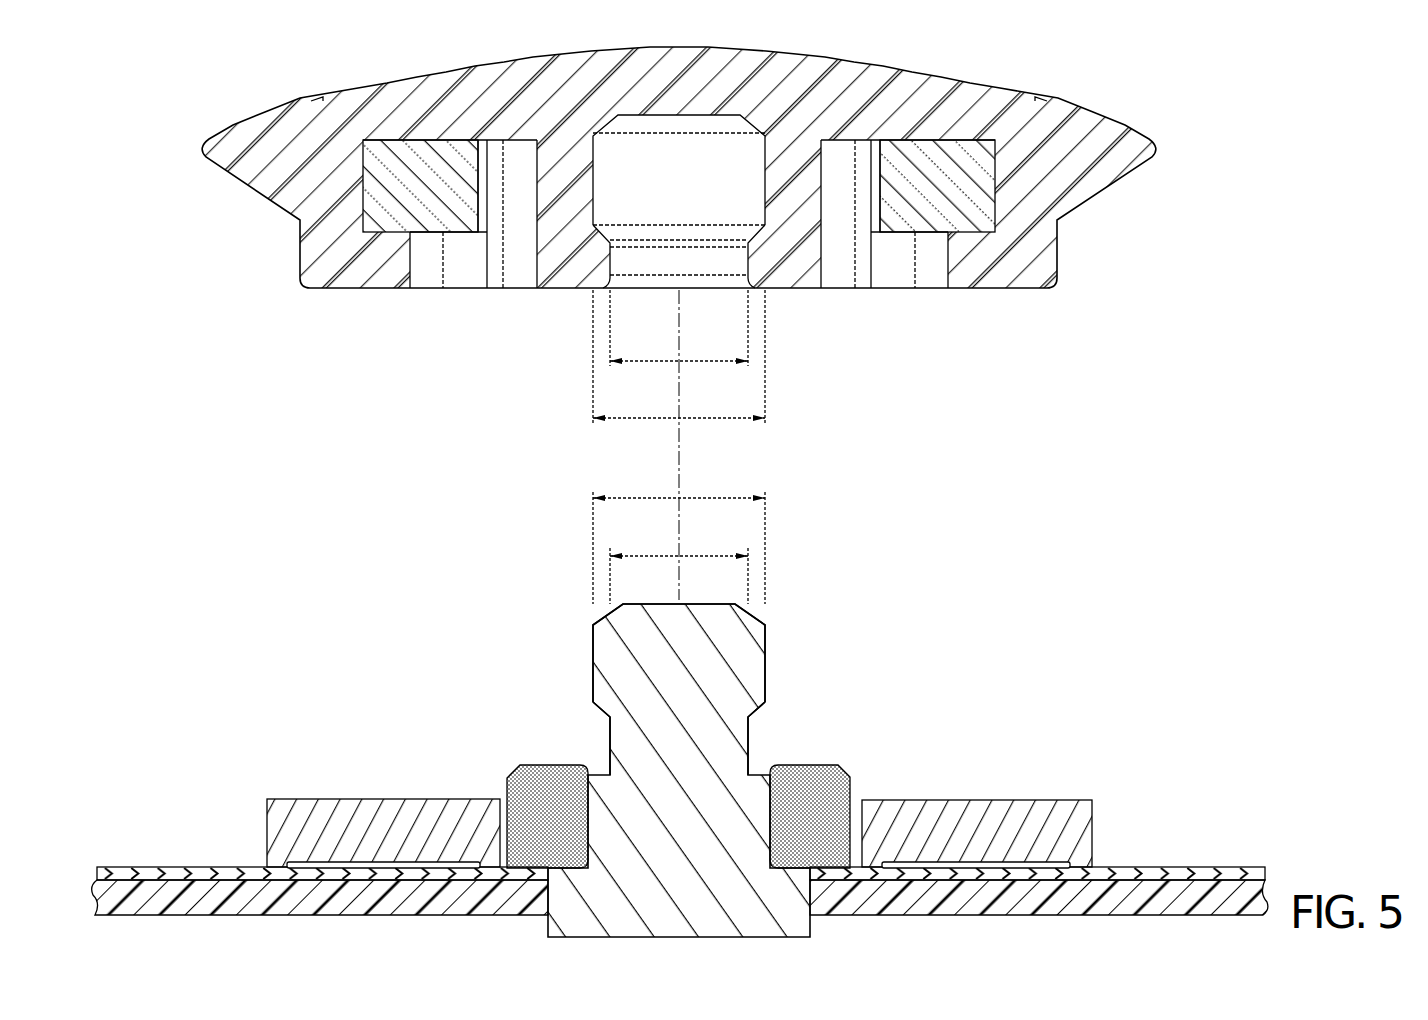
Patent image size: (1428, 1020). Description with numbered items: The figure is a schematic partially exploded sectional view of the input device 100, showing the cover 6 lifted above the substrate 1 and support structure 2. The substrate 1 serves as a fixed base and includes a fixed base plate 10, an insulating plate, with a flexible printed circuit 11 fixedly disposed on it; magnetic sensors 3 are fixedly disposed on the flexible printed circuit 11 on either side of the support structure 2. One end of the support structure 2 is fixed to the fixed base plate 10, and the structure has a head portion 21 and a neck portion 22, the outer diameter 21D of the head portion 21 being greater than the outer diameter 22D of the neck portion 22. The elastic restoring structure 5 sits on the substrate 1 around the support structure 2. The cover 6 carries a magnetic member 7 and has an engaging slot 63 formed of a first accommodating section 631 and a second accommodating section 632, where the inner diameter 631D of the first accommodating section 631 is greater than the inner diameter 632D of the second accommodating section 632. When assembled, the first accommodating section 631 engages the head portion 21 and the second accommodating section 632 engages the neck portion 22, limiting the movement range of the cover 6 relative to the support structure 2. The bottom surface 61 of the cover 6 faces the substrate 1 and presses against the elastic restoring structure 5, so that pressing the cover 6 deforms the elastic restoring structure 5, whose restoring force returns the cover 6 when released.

The input device 100 is at (1167, 77).
The cover 6 is at (679, 223).
The bottom surface 61 is at (353, 296).
The magnetic member 7 is at (461, 240).
The engaging slot 63 is at (750, 257).
The first accommodating section 631 is at (735, 184).
The second accommodating section 632 is at (718, 266).
The inner diameter of the second accommodating section 632D is at (679, 328).
The inner diameter of the first accommodating section 631D is at (679, 357).
The outer diameter of the head portion 21D is at (679, 535).
The outer diameter of the neck portion 22D is at (679, 564).
The support structure 2 is at (713, 770).
The head portion 21 is at (760, 665).
The neck portion 22 is at (716, 745).
The elastic restoring structure 5 is at (541, 758).
The substrate 1 is at (651, 838).
The fixed base plate 10 is at (92, 893).
The flexible printed circuit 11 is at (144, 860).
The magnetic sensor 3 is at (258, 820).